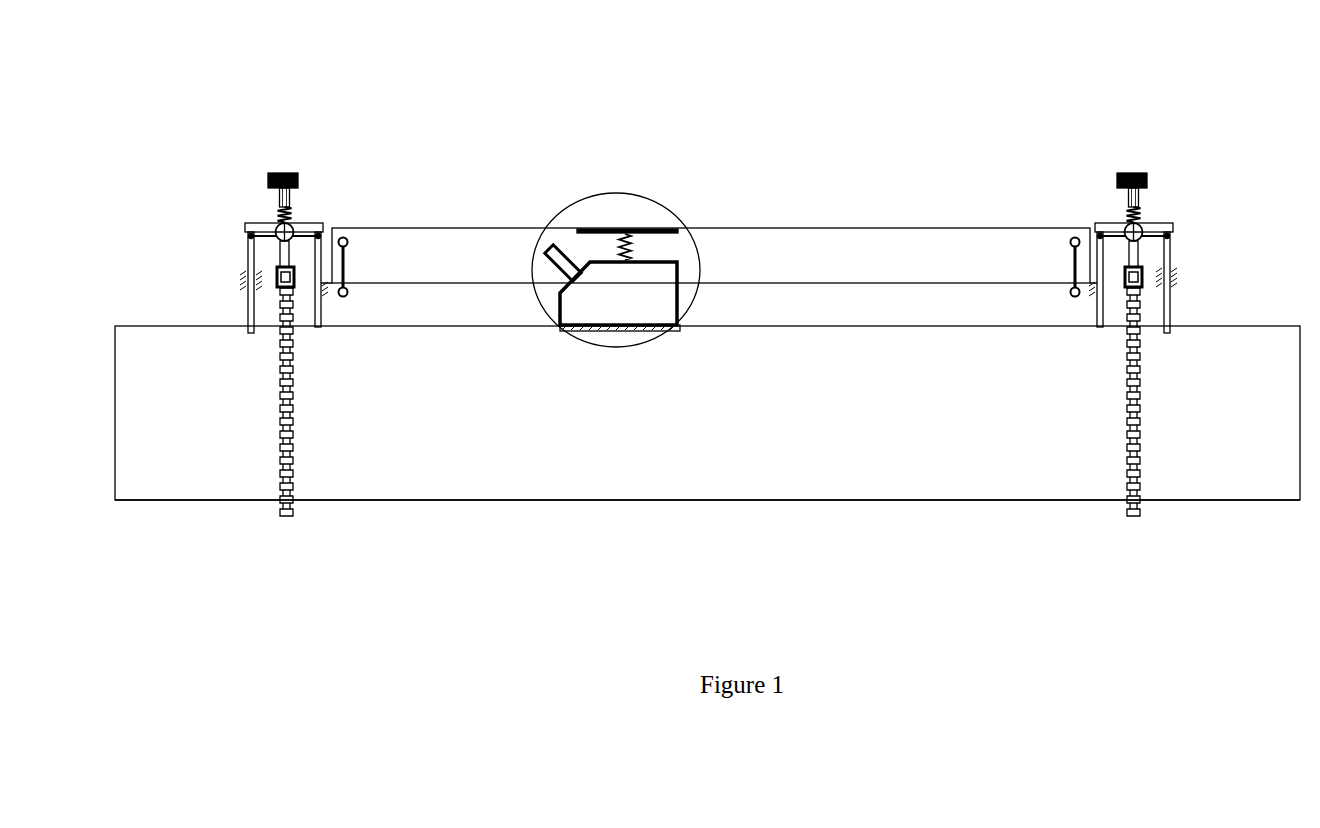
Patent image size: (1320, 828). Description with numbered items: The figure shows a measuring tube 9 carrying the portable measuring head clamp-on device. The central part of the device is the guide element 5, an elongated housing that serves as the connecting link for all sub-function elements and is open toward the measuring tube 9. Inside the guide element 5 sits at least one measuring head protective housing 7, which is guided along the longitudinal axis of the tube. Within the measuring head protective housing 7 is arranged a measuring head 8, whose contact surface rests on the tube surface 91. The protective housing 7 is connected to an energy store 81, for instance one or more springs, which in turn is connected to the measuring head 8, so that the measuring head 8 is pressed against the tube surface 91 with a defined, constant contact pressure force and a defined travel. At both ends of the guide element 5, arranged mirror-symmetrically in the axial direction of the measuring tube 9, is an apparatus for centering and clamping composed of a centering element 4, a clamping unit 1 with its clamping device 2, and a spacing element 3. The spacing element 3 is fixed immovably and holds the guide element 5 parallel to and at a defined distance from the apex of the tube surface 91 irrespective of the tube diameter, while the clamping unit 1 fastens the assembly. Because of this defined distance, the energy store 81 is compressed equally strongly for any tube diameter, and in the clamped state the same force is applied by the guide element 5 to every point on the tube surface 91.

The clamping unit 1 is at (283, 173).
The clamping device 2 is at (288, 517).
The spacing element 3 is at (320, 230).
The centering element 4 is at (247, 238).
The guide element 5 is at (392, 283).
The measuring head protective housing 7 is at (733, 227).
The measuring head 8 is at (613, 290).
The energy store 81 is at (622, 233).
The measuring tube 9 is at (545, 472).
The tube surface 91 is at (413, 500).